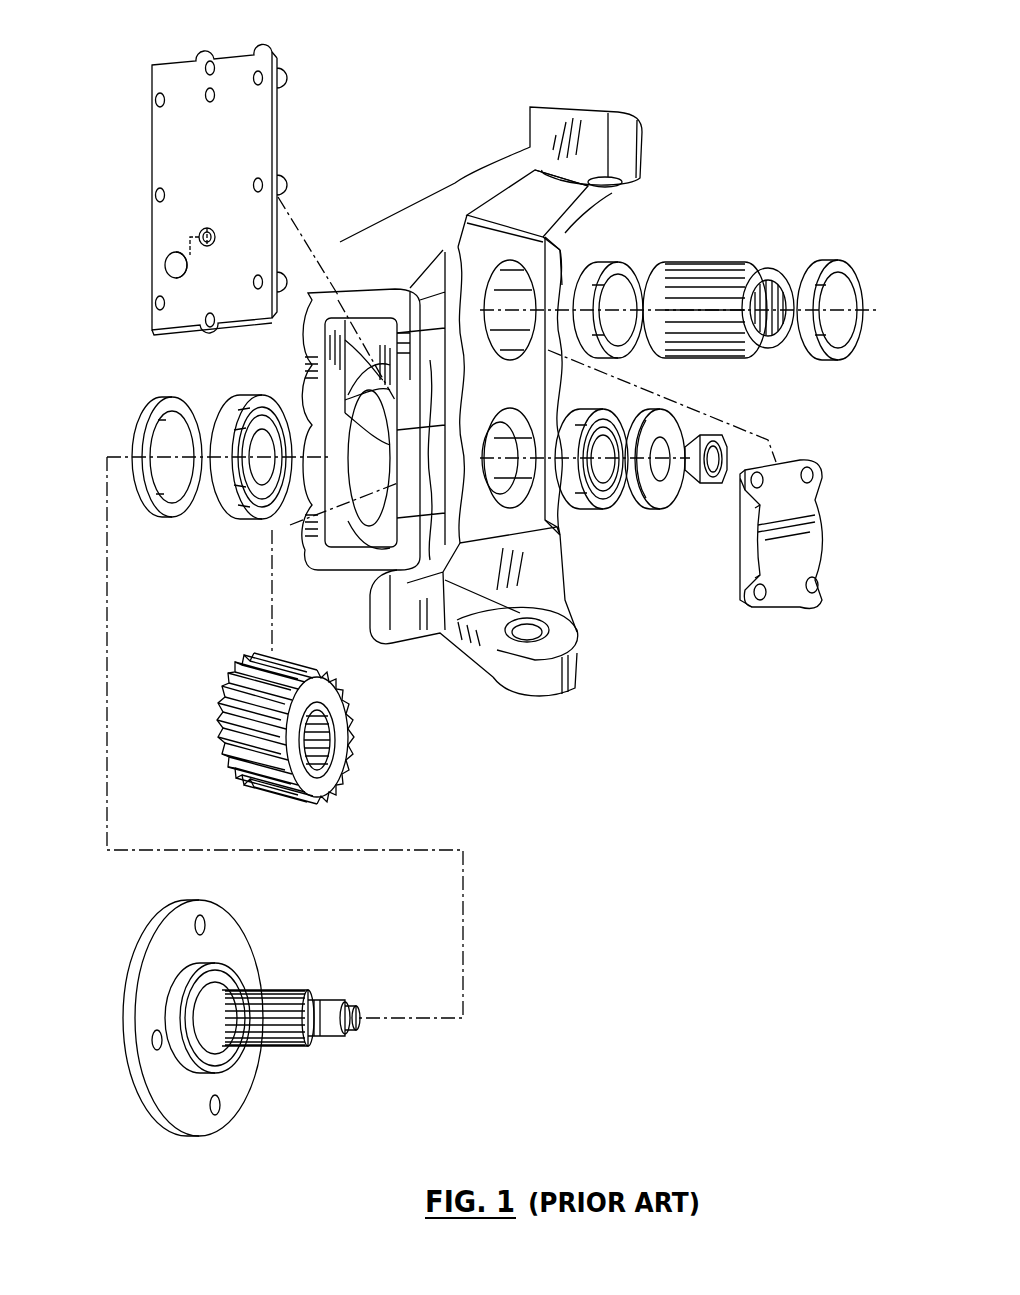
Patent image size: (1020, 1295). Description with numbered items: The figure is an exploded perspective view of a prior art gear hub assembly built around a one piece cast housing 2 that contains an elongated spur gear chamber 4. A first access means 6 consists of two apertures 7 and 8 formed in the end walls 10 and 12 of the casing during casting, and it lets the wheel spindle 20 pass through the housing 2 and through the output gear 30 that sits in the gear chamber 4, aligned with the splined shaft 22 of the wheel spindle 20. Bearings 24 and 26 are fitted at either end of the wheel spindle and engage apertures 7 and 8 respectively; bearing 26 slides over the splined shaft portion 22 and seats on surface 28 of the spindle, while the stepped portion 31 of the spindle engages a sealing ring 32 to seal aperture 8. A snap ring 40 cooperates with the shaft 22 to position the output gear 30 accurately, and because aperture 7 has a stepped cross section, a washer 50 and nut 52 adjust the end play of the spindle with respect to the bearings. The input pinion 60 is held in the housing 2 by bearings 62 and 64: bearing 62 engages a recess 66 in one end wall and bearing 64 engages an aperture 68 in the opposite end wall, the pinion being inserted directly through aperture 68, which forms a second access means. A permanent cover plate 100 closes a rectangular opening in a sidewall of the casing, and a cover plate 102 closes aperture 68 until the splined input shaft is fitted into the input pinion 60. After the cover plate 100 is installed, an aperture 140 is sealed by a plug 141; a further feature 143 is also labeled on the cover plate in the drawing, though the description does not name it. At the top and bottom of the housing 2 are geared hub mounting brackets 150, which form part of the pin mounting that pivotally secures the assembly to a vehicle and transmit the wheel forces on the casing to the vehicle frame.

The housing 2 is at (473, 427).
The spur gear chamber 4 is at (362, 428).
The first access means 6 is at (515, 495).
The aperture 7 is at (548, 350).
The aperture 8 is at (407, 423).
The end wall 10 is at (572, 213).
The end wall 12 is at (312, 345).
The wheel spindle 20 is at (252, 1018).
The splined shaft portion 22 is at (290, 990).
The bearing 24 is at (592, 515).
The bearing 26 is at (225, 410).
The surface 28 is at (222, 1055).
The output gear 30 is at (320, 775).
The stepped portion 31 is at (188, 1052).
The sealing ring 32 is at (148, 405).
The snap ring 40 is at (636, 510).
The washer 50 is at (665, 490).
The nut 52 is at (727, 480).
The input pinion 60 is at (728, 275).
The bearing 62 is at (640, 300).
The bearing 64 is at (830, 265).
The recess 66 is at (375, 325).
The aperture 68 is at (578, 247).
The cover plate 100 is at (255, 123).
The cover plate 102 is at (785, 590).
The aperture 140 is at (215, 237).
The plug 141 is at (165, 265).
The fastener hole 143 is at (213, 93).
The geared hub mounting brackets 150 is at (625, 125).